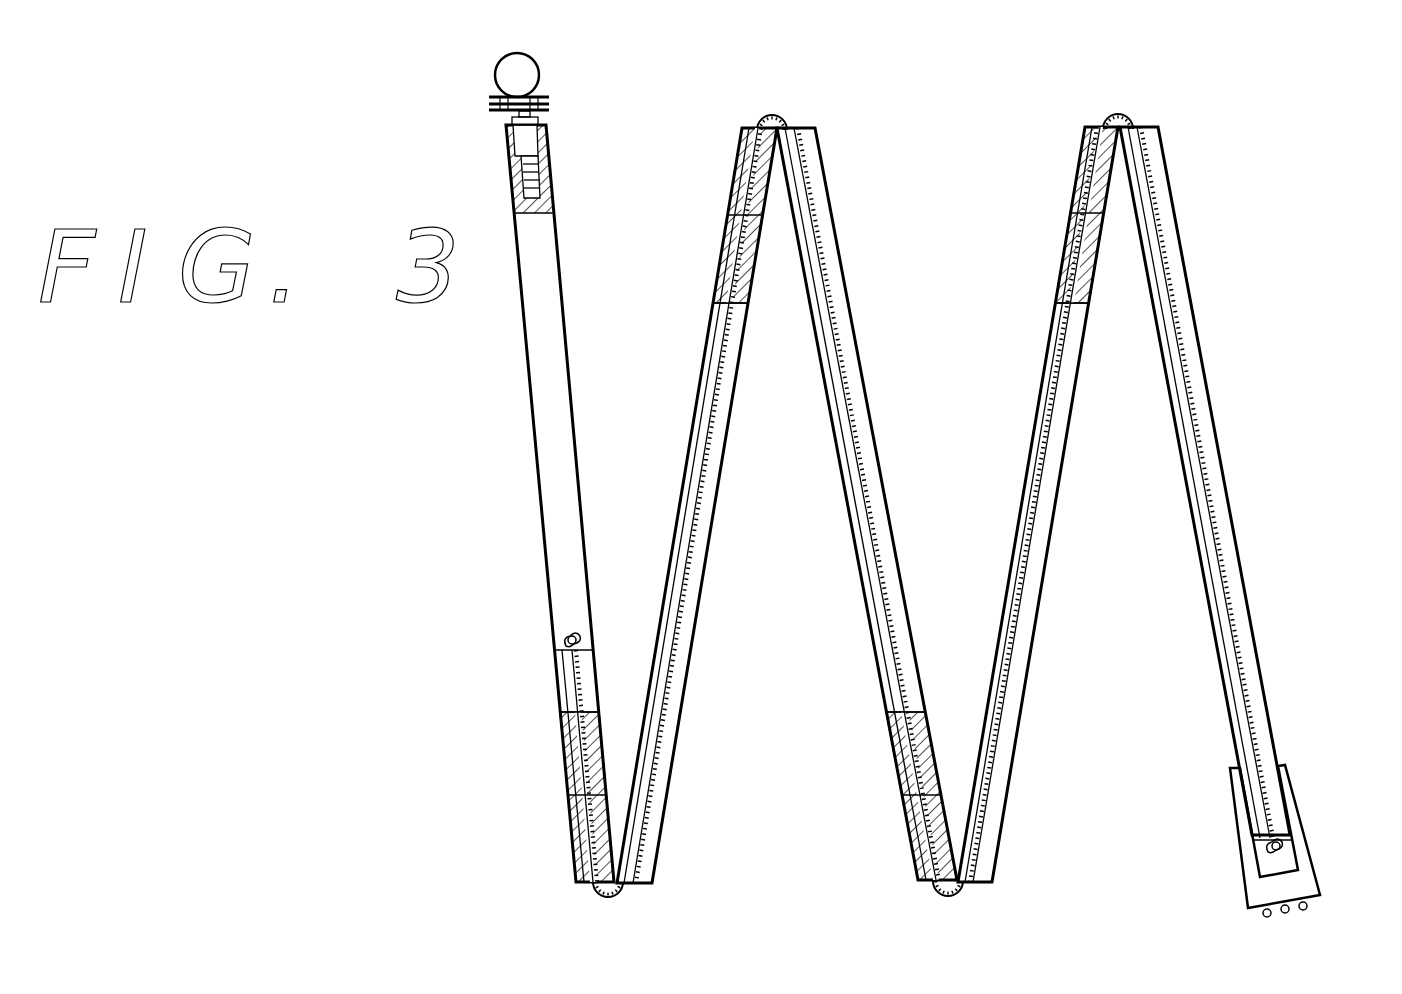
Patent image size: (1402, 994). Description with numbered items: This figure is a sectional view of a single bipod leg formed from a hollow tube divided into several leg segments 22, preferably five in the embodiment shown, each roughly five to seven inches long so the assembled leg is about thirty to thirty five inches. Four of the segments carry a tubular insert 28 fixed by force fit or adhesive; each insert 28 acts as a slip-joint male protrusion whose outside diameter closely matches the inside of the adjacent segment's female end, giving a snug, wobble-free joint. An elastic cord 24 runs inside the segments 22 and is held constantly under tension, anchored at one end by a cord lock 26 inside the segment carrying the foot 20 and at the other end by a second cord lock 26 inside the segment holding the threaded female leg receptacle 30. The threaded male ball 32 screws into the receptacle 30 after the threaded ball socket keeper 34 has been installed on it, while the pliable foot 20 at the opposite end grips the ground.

The foot 20 is at (1300, 885).
The leg segment 22 is at (536, 490).
The elastic cord 24 is at (1160, 262).
The cord lock 26 is at (560, 650).
The tubular insert 28 is at (745, 165).
The threaded female leg receptacle 30 is at (544, 176).
The threaded male ball 32 is at (530, 74).
The threaded ball socket keeper 34 is at (488, 108).